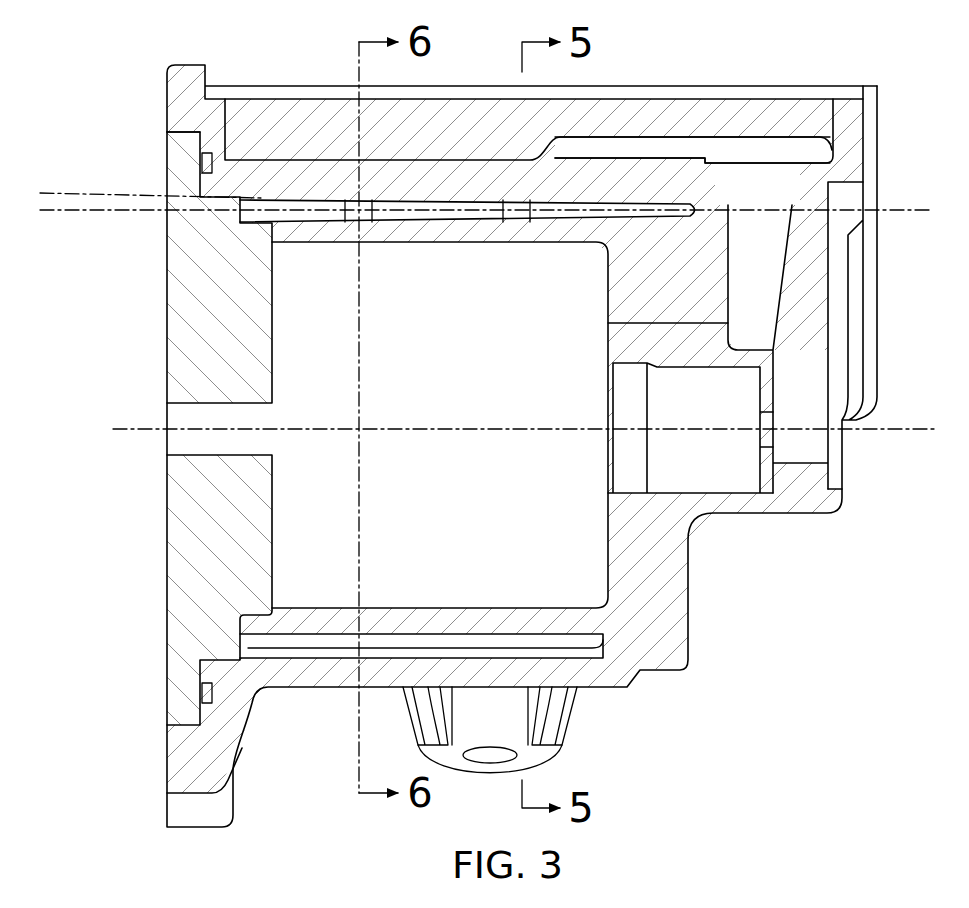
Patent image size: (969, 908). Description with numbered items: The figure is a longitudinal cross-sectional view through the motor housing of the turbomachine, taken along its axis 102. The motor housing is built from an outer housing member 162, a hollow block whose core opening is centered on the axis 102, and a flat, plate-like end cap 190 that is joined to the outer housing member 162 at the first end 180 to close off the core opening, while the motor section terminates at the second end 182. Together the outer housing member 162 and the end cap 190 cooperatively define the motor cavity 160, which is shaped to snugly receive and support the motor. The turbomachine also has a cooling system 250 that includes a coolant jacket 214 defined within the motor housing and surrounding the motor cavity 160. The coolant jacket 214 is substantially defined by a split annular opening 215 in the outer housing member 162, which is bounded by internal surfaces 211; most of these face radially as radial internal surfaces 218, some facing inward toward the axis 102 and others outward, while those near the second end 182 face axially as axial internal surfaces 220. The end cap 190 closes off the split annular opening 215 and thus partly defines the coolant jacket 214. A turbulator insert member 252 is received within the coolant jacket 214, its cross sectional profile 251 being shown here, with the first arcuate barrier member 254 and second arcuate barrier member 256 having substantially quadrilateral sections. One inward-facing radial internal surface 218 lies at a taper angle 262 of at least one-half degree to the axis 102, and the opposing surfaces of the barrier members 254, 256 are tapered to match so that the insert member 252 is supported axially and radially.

The axis 102 is at (893, 428).
The motor cavity 160 is at (478, 382).
The outer housing member 162 is at (601, 176).
The first end 180 is at (167, 103).
The second end 182 is at (845, 500).
The end cap 190 is at (172, 283).
The internal surfaces 211 is at (453, 207).
The coolant jacket 214 is at (325, 688).
The split annular opening 215 is at (258, 220).
The radial internal surfaces 218 is at (425, 636).
The axial internal surfaces 220 is at (600, 645).
The cooling system 250 is at (277, 197).
The cross sectional profile 251 is at (384, 215).
The turbulator insert member 252 is at (370, 197).
The first arcuate barrier member 254 is at (352, 222).
The second arcuate barrier member 256 is at (518, 222).
The taper angle 262 is at (57, 250).